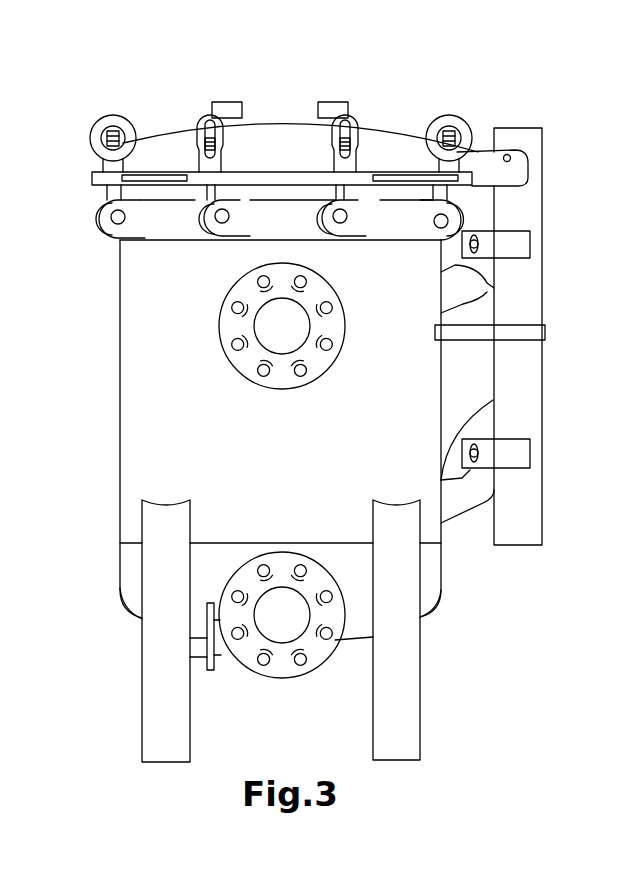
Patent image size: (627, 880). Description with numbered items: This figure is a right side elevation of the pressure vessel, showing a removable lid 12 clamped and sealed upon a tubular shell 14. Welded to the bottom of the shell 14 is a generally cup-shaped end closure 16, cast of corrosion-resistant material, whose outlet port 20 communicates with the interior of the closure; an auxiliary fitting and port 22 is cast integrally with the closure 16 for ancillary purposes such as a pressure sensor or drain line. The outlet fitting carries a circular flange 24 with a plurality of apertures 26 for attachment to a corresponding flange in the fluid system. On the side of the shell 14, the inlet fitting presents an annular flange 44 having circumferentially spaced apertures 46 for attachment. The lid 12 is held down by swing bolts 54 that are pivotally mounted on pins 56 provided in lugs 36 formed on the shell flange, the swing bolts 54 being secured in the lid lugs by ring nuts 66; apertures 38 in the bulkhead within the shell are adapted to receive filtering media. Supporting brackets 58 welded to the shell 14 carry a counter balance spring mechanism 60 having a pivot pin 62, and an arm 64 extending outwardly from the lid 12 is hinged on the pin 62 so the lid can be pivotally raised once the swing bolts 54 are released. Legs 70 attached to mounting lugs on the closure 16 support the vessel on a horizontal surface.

The removable lid 12 is at (160, 120).
The tubular shell 14 is at (118, 430).
The end closure 16 is at (118, 600).
The outlet port 20 is at (277, 638).
The auxiliary fitting and port 22 is at (208, 668).
The circular flange 24 is at (245, 668).
The apertures 26 is at (330, 636).
The lugs 36 is at (96, 216).
The apertures 38 is at (467, 221).
The annular flange 44 is at (218, 322).
The apertures 46 is at (262, 372).
The swing bolt 54 is at (107, 142).
The pins 56 is at (117, 226).
The supporting brackets 58 is at (462, 305).
The counter balance spring mechanism 60 is at (626, 106).
The pivot pin 62 is at (508, 155).
The arm 64 is at (490, 172).
The ring nuts 66 is at (107, 118).
The legs 70 is at (142, 660).